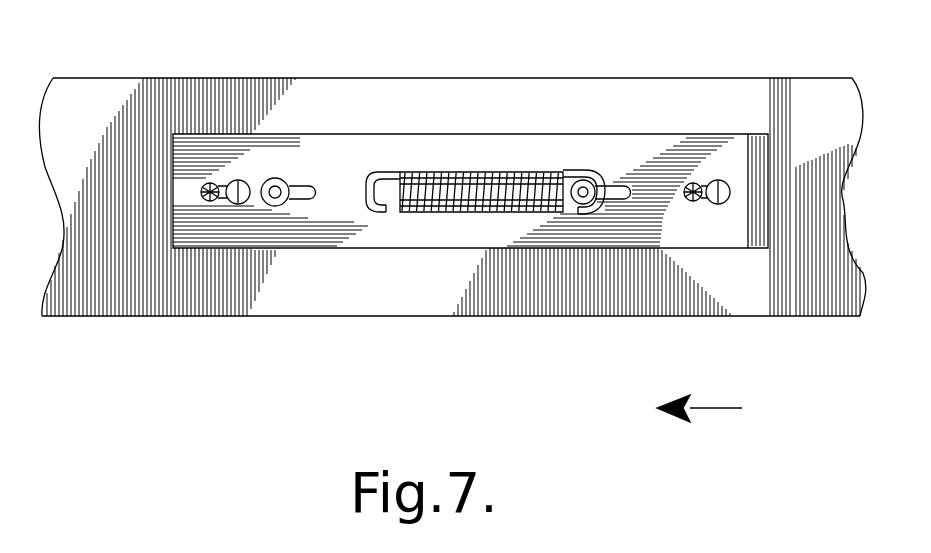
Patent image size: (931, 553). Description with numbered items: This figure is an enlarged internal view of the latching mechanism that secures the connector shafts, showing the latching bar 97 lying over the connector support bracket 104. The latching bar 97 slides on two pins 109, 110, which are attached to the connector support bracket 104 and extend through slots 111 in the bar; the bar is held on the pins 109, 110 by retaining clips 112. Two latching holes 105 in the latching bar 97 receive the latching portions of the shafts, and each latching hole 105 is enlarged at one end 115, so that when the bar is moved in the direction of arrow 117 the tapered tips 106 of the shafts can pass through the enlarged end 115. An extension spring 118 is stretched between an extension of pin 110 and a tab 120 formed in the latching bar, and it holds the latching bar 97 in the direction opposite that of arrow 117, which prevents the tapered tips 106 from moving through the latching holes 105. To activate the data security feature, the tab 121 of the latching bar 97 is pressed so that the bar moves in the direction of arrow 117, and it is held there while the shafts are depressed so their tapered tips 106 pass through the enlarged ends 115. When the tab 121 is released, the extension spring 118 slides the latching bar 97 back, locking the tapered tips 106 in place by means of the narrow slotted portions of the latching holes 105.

The latching bar 97 is at (252, 137).
The connector support bracket 104 is at (120, 78).
The latching hole 105 is at (221, 201).
The tapered tip 106 is at (212, 183).
The pin 109 is at (277, 178).
The pin 110 is at (577, 207).
The slot 111 is at (300, 200).
The retaining clip 112 is at (286, 172).
The enlarged end 115 is at (235, 204).
The arrow 117 is at (702, 410).
The extension spring 118 is at (430, 216).
The tab 120 is at (382, 170).
The tab 121 is at (758, 163).